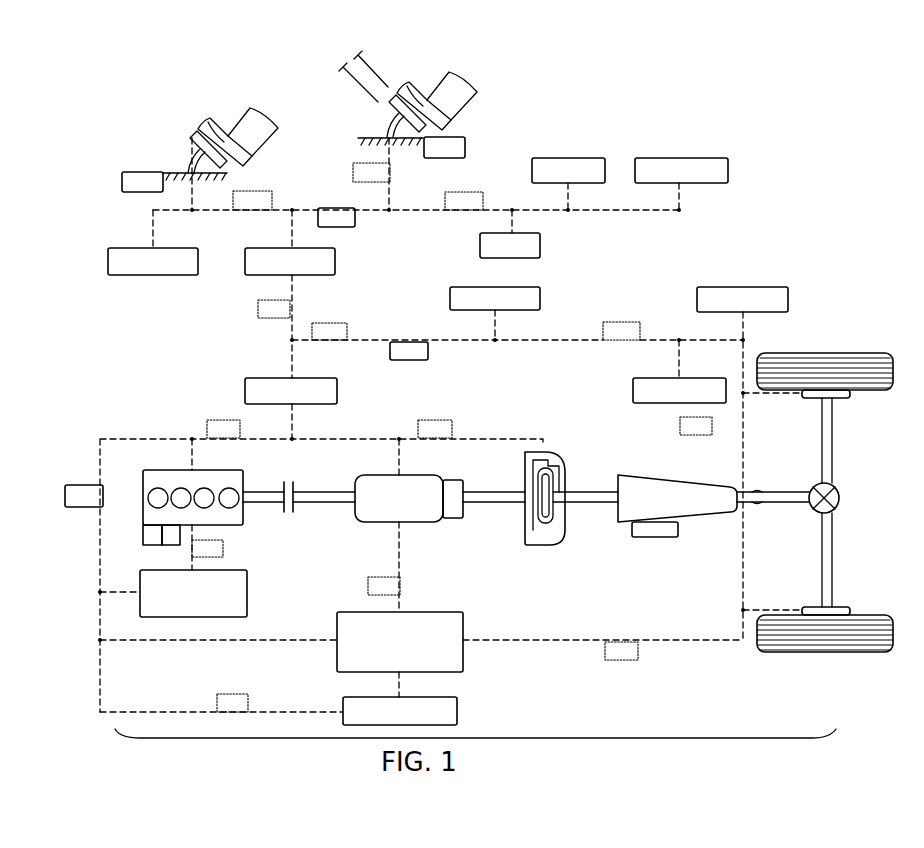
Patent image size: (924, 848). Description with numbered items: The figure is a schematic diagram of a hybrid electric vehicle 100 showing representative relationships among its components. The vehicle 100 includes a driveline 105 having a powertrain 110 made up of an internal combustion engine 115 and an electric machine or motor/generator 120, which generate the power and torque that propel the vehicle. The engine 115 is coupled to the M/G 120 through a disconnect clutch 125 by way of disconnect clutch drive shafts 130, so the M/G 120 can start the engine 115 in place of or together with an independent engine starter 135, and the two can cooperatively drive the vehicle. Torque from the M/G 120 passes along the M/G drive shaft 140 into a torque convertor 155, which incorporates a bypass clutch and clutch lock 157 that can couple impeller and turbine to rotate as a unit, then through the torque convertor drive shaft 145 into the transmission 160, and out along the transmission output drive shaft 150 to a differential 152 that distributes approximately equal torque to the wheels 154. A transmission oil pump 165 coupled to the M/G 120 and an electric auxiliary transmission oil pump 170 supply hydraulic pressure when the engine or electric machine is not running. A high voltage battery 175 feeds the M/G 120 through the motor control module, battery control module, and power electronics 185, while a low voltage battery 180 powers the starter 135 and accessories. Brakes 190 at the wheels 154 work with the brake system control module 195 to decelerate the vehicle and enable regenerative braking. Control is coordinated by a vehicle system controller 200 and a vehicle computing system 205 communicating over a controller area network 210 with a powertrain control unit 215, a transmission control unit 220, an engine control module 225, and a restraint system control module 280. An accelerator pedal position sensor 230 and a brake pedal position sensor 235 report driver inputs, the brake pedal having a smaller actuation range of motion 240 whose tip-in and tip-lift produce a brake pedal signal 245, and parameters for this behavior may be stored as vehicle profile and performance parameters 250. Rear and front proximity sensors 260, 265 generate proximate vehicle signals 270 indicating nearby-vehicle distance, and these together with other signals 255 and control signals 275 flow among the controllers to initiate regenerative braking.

The hybrid electric vehicle 100 is at (738, 230).
The driveline 105 is at (577, 738).
The powertrain 110 is at (477, 578).
The internal combustion engine 115 is at (243, 522).
The electric machine 120 is at (410, 522).
The disconnect clutch 125 is at (300, 505).
The disconnect clutch drive shafts 130 is at (280, 490).
The engine starter 135 is at (143, 546).
The M/G drive shaft 140 is at (505, 490).
The torque convertor drive shaft 145 is at (598, 488).
The transmission output drive shaft 150 is at (787, 503).
The differential 152 is at (838, 490).
The wheels 154 is at (858, 392).
The torque convertor 155 is at (565, 535).
The bypass clutch 157 is at (557, 482).
The transmission 160 is at (700, 515).
The transmission oil pump 165 is at (463, 515).
The electric auxiliary transmission oil pump 170 is at (650, 537).
The high voltage battery 175 is at (457, 712).
The low voltage battery 180 is at (170, 545).
The motor control module / battery control module / power electronics 185 is at (463, 652).
The brakes 190 is at (808, 398).
The brake system control module 195 is at (697, 298).
The vehicle system controller 200 is at (337, 262).
The vehicle computing system 205 is at (155, 277).
The controller area network 210 is at (355, 222).
The powertrain control unit/module 215 is at (337, 393).
The transmission control unit 220 is at (663, 405).
The engine control module 225 is at (247, 610).
The accelerator pedal position and motion sensor 230 is at (195, 160).
The brake pedal position and motion sensor 235 is at (390, 122).
The smaller actuation range of motion 240 is at (348, 70).
The brake pedal signal 245 is at (353, 166).
The vehicle profile and performance parameters 250 is at (540, 250).
The other signals 255 is at (258, 308).
The rear proximity sensor 260 is at (580, 158).
The front proximity sensor 265 is at (686, 158).
The proximate vehicle signals 270 is at (250, 191).
The control signals 275 is at (210, 420).
The restraint system control module 280 is at (450, 296).